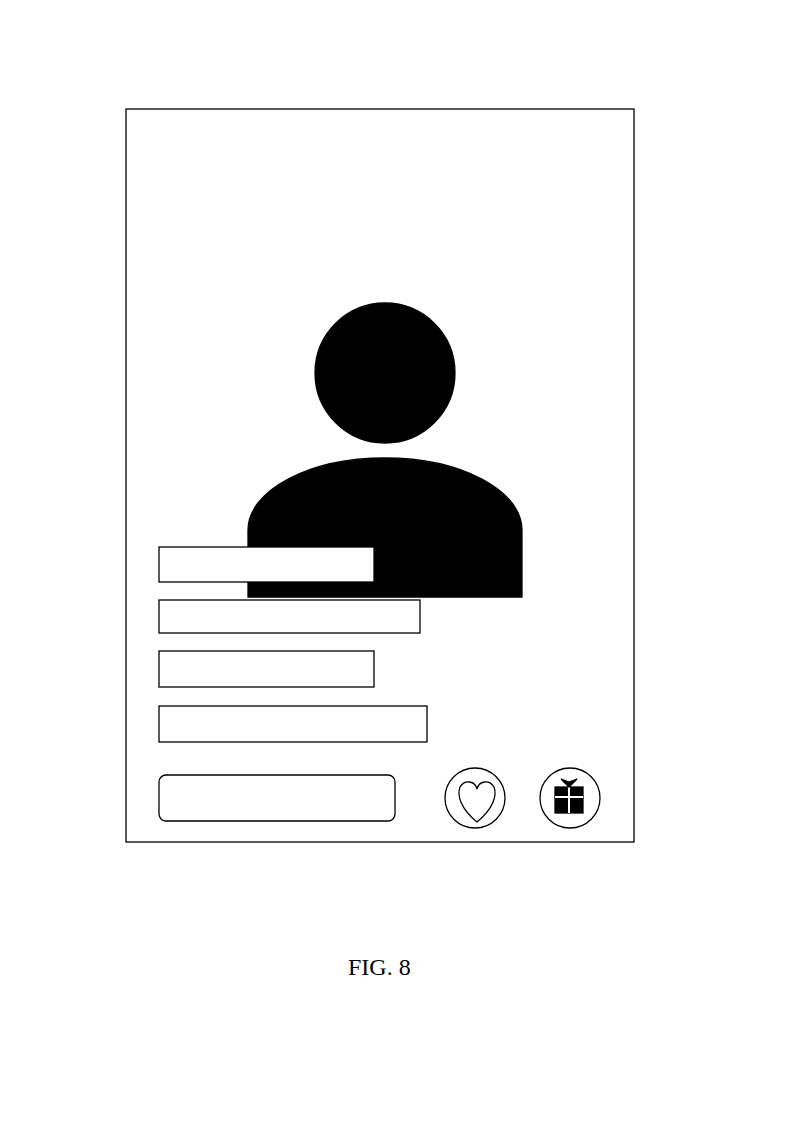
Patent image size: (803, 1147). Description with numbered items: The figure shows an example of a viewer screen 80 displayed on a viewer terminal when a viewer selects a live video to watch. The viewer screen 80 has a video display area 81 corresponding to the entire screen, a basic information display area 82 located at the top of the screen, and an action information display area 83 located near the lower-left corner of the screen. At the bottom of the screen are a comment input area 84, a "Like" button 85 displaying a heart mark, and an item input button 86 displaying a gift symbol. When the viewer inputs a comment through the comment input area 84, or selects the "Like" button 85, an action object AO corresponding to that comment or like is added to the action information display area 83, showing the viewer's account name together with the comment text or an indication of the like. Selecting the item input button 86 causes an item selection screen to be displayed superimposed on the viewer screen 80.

The viewer screen 80 is at (436, 109).
The video display area 81 is at (607, 313).
The basic information display area 82 is at (102, 115).
The action information display area 83 is at (103, 533).
The comment input area 84 is at (177, 807).
The "Like" button 85 is at (458, 808).
The item input button 86 is at (592, 800).
The action object AO is at (187, 557).